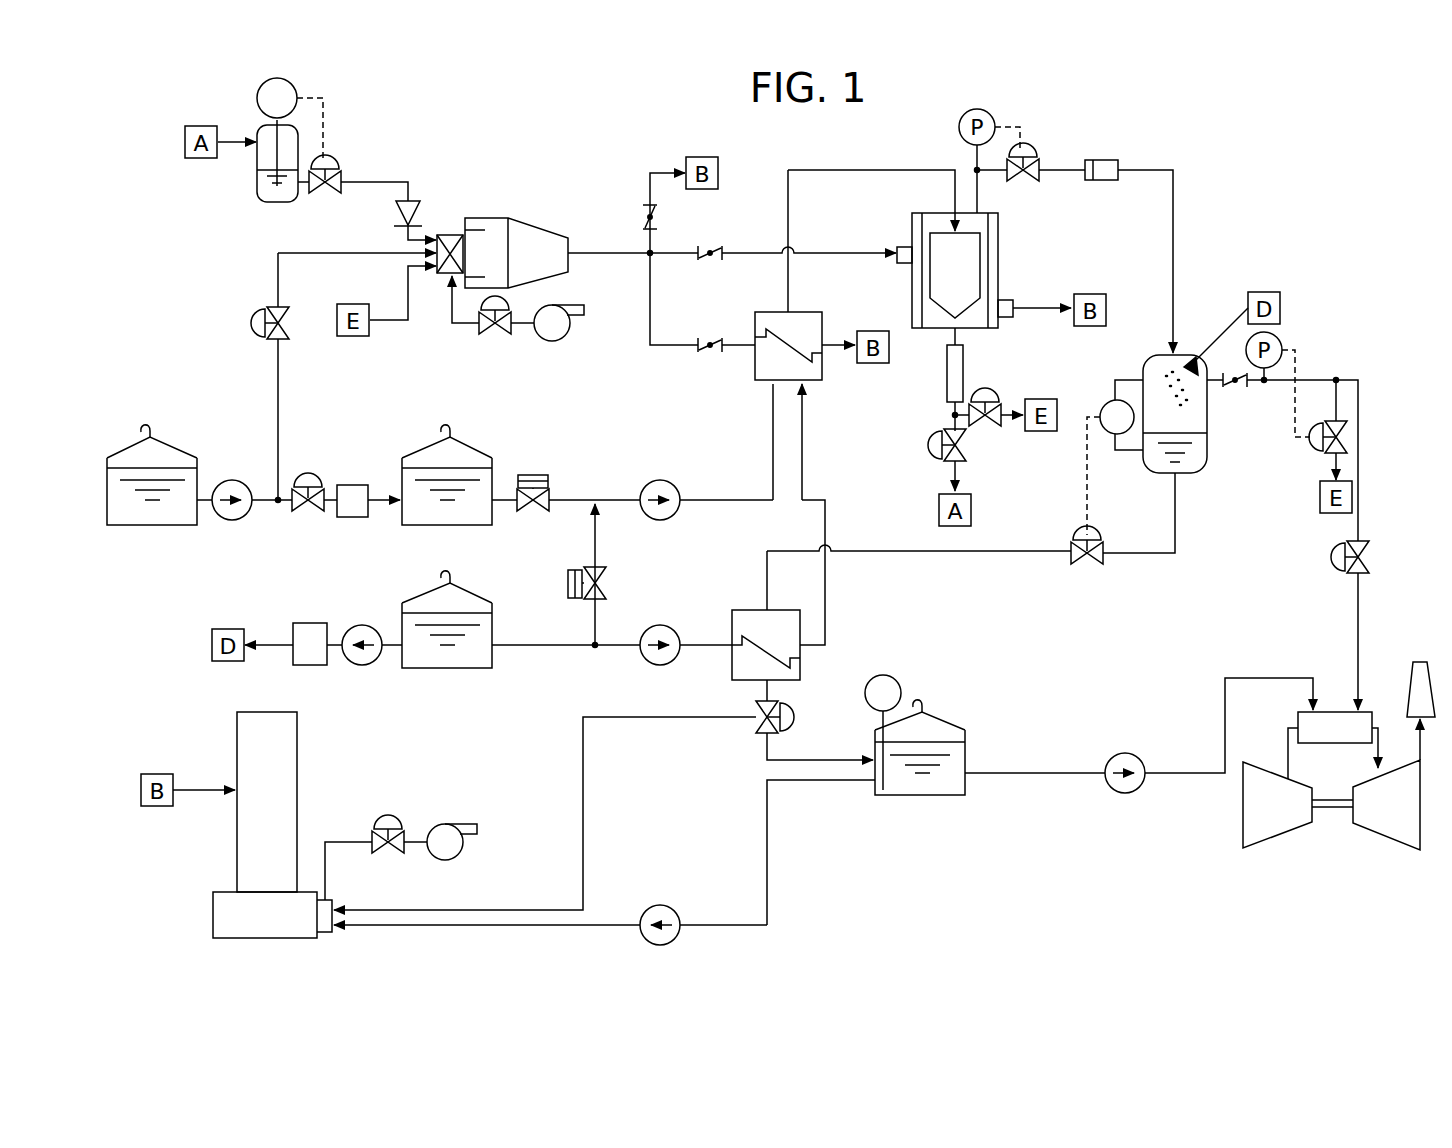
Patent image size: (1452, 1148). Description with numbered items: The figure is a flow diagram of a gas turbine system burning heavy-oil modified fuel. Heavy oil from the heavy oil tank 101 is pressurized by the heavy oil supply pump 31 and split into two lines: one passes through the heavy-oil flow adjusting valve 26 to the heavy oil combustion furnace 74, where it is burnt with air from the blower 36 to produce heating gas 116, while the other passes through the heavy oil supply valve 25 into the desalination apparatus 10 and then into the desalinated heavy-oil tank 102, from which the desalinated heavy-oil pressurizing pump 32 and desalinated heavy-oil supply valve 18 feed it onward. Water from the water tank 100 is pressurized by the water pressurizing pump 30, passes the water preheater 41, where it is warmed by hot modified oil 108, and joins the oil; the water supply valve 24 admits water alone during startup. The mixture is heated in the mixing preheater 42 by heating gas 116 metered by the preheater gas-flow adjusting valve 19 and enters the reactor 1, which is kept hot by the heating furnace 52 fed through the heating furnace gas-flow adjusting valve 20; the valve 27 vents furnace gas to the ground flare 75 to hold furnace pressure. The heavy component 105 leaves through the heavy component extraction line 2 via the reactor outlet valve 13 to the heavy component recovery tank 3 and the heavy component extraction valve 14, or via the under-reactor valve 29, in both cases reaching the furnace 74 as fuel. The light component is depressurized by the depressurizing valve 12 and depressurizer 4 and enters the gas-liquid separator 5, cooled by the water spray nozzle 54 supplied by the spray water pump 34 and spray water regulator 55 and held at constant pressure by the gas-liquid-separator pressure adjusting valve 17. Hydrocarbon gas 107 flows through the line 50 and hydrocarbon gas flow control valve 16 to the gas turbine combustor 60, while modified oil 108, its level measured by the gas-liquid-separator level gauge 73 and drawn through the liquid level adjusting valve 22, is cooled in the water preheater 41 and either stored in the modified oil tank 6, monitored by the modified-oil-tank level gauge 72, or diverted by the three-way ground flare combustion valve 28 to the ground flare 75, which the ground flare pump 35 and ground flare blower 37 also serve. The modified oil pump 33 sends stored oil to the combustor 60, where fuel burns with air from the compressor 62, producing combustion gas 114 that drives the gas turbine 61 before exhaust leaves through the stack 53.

The reactor 1 is at (937, 213).
The heavy component extraction line 2 is at (947, 373).
The heavy component recovery tank 3 is at (258, 130).
The depressurizer 4 is at (1102, 160).
The gas-liquid separator 5 is at (1208, 460).
The modified oil tank 6 is at (917, 797).
The desalination apparatus 10 is at (353, 485).
The depressurizing valve 12 is at (1026, 182).
The reactor outlet valve 13 is at (967, 448).
The heavy component extraction valve 14 is at (323, 194).
The hydrocarbon gas flow control valve 16 is at (1370, 557).
The gas-liquid-separator pressure adjusting valve 17 is at (1312, 450).
The desalinated heavy-oil supply valve 18 is at (536, 511).
The preheater gas-flow adjusting valve 19 is at (713, 357).
The heating furnace gas-flow adjusting valve 20 is at (713, 262).
The liquid level adjusting valve 22 is at (1083, 567).
The water supply valve 24 is at (607, 583).
The heavy oil supply valve 25 is at (304, 512).
The heavy-oil flow adjusting valve 26 is at (288, 317).
The valve 27 is at (662, 214).
The ground flare combustion valve 28 is at (760, 726).
The under-reactor valve 29 is at (988, 432).
The water pressurizing pump 30 is at (671, 663).
The heavy oil supply pump 31 is at (234, 522).
The desalinated heavy-oil pressurizing pump 32 is at (666, 522).
The modified oil pump 33 is at (1125, 796).
The spray water pump 34 is at (364, 667).
The ground flare pump 35 is at (660, 904).
The blower 36 is at (560, 340).
The ground flare blower 37 is at (450, 858).
The water preheater 41 is at (802, 660).
The mixing preheater 42 is at (812, 312).
The line 50 is at (1360, 412).
The heating furnace 52 is at (929, 248).
The stack 53 is at (1420, 660).
The water spray nozzle 54 is at (1194, 354).
The spray water regulator 55 is at (308, 623).
The gas turbine combustor 60 is at (1296, 720).
The gas turbine 61 is at (1389, 842).
The compressor 62 is at (1279, 842).
The modified-oil-tank level gauge 72 is at (894, 683).
The gas-liquid-separator level gauge 73 is at (1105, 397).
The heavy oil combustion furnace 74 is at (530, 218).
The ground flare 75 is at (299, 763).
The water tank 100 is at (464, 597).
The heavy oil tank 101 is at (176, 452).
The desalinated heavy-oil tank 102 is at (471, 452).
The heavy component 105 is at (958, 335).
The hydrocarbon gas 107 is at (1222, 392).
The modified oil 108 is at (1140, 558).
The combustion gas 114 is at (1375, 756).
The heating gas 116 is at (610, 257).